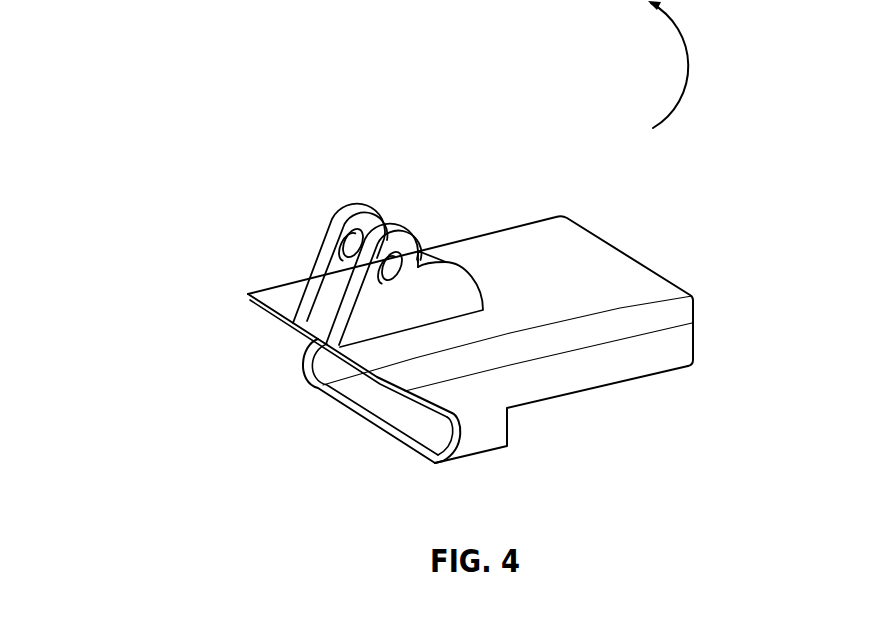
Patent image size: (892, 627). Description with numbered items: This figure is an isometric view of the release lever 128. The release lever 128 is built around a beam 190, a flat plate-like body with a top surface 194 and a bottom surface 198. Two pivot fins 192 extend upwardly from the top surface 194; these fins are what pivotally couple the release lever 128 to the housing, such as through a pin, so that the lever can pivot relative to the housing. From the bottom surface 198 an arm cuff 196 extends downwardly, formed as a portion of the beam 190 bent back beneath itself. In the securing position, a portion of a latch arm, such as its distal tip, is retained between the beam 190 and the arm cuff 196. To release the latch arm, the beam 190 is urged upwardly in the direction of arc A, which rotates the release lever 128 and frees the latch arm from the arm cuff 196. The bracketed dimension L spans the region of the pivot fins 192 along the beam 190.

The release lever 128 is at (169, 185).
The beam 190 is at (582, 226).
The pivot fins 192 is at (455, 262).
The top surface 194 is at (633, 268).
The arm cuff 196 is at (482, 438).
The bottom surface 198 is at (665, 372).
The length L is at (563, 163).
The arc A is at (692, 45).